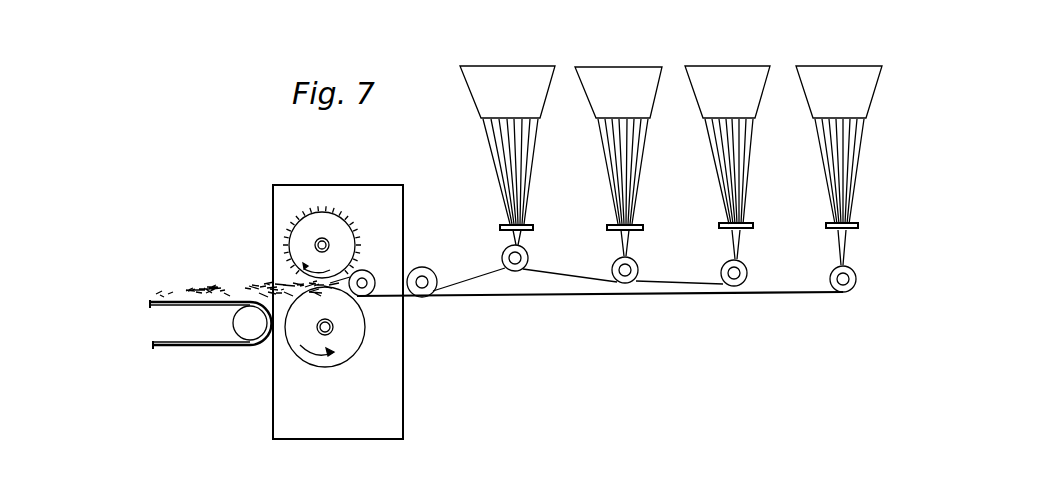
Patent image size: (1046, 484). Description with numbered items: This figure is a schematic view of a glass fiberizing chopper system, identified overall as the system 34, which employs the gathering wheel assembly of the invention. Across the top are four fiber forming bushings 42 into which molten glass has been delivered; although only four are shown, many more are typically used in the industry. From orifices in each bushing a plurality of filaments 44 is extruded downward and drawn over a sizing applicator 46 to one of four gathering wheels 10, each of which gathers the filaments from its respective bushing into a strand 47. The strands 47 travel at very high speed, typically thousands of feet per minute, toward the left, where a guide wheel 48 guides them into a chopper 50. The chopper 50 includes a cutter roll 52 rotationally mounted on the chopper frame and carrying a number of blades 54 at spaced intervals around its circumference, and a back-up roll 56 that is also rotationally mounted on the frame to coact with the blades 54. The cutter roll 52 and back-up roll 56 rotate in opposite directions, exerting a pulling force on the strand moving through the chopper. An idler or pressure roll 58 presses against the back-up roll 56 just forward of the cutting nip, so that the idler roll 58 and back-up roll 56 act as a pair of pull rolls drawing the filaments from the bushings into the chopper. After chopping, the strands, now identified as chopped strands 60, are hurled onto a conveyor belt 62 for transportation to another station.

The gathering wheel 10 is at (612, 270).
The apparatus 34 is at (498, 0).
The fiberizing bushing 42 is at (528, 65).
The filaments 44 is at (597, 165).
The sizing applicator 46 is at (606, 228).
The strand 47 is at (683, 297).
The guide wheel 48 is at (436, 272).
The chopper 50 is at (412, 387).
The cutter roll 52 is at (332, 225).
The blades 54 is at (303, 212).
The back-up roll 56 is at (365, 343).
The idler roll 58 is at (373, 262).
The chopped strands 60 is at (258, 277).
The conveyor belt 62 is at (208, 350).